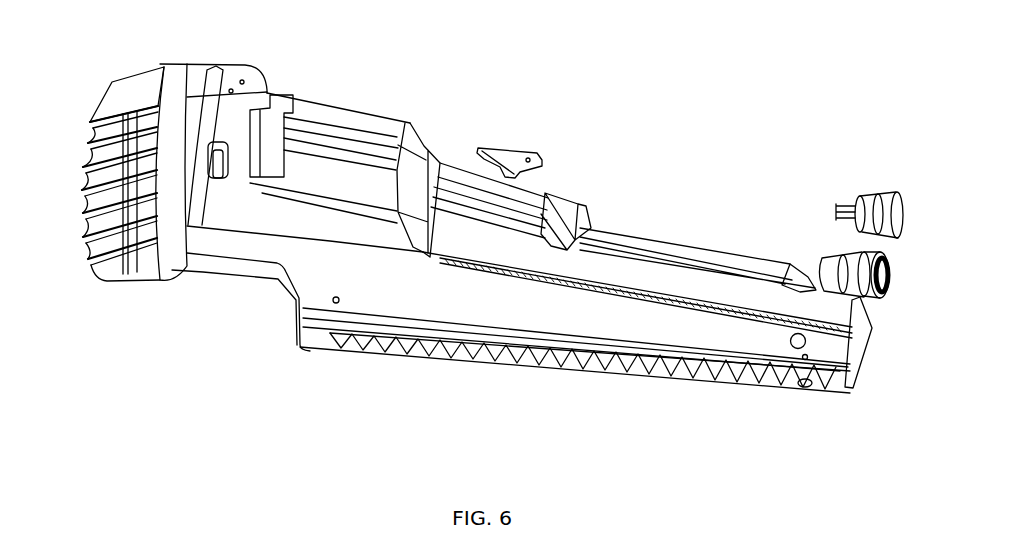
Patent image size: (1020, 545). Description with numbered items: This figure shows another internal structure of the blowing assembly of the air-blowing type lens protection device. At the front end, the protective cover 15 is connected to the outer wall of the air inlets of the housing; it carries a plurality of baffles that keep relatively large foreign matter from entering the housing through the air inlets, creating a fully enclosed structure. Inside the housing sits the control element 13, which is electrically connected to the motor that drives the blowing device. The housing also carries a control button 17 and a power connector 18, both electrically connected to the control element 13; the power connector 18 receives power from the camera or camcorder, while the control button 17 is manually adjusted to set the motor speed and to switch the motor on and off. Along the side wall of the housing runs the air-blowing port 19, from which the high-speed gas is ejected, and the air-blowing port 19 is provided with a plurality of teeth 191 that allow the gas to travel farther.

The control element 13 is at (503, 157).
The protective cover 15 is at (112, 177).
The control button 17 is at (877, 218).
The power connector 18 is at (840, 263).
The air-blowing port 19 is at (358, 347).
The teeth 191 is at (477, 358).